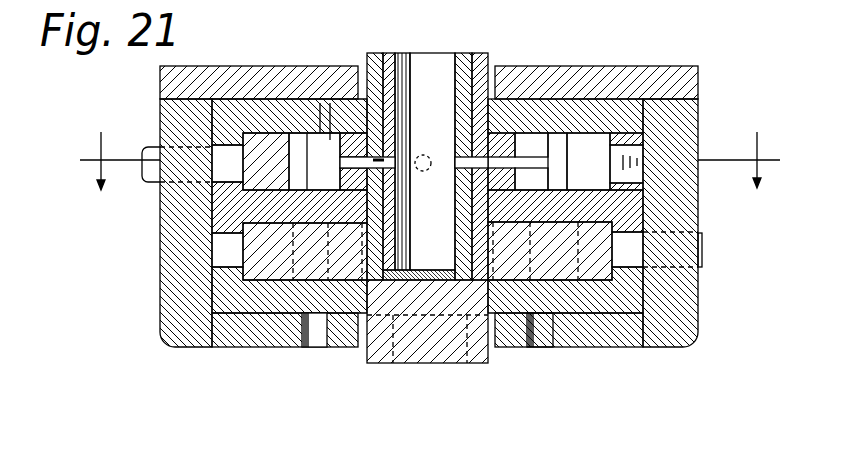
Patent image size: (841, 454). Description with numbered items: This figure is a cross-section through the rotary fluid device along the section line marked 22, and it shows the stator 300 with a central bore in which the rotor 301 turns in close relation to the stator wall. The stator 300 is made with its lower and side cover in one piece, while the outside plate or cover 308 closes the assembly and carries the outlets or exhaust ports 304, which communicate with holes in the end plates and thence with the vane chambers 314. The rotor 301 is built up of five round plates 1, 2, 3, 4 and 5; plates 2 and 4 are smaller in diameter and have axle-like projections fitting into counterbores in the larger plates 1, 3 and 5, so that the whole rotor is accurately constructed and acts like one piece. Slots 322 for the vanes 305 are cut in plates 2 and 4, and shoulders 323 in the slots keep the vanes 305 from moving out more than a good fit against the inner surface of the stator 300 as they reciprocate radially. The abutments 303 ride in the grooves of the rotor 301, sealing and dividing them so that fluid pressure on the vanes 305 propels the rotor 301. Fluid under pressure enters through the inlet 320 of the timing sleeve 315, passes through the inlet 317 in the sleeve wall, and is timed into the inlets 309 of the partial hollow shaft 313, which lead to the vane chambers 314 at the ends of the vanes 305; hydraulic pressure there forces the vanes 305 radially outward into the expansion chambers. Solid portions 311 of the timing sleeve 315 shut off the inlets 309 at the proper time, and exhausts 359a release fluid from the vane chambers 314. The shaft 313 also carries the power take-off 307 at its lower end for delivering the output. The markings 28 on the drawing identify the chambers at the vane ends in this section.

The stator 300 is at (180, 205).
The rotor 301 is at (248, 303).
The abutment 303 is at (150, 153).
The outlet or exhaust port 304 is at (318, 335).
The vane 305 is at (597, 133).
The power take-off 307 is at (435, 352).
The cover 308 is at (688, 85).
The inlet 309 is at (493, 165).
The solid portion of timing sleeve 311 is at (388, 165).
The partial hollow shaft 313 is at (478, 202).
The vane chamber 314 is at (324, 145).
The timing sleeve 315 is at (437, 50).
The inlet through timing sleeve 317 is at (493, 166).
The inlet 320 is at (442, 65).
The slot 322 is at (577, 147).
The shoulder 323 is at (645, 134).
The exhaust from vane chamber 359a is at (522, 115).
The rotor plate 1 is at (636, 120).
The rotor plate 2 is at (643, 153).
The rotor plate 3 is at (633, 204).
The rotor plate 4 is at (628, 250).
The rotor plate 5 is at (633, 297).
The chamber 28 is at (487, 150).
The section line 22- 22 is at (431, 161).